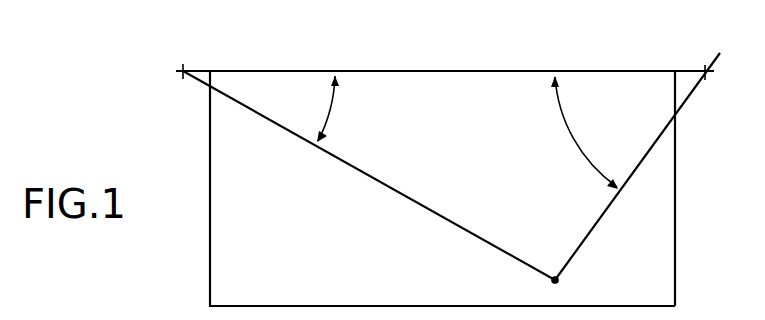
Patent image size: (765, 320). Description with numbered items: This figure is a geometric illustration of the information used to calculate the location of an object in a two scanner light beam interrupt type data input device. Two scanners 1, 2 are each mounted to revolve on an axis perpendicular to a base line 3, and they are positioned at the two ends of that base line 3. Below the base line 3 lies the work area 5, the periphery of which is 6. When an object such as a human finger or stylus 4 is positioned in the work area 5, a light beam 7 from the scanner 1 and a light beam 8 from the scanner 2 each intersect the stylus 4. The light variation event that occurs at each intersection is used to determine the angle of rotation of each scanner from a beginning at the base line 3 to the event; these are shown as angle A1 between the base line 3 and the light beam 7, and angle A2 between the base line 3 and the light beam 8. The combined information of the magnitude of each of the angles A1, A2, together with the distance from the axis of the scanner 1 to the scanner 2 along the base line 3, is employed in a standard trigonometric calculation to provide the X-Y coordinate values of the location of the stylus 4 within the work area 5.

The scanner 1 is at (183, 68).
The scanner 2 is at (721, 57).
The base line 3 is at (293, 71).
The stylus 4 is at (562, 277).
The work area 5 is at (218, 244).
The periphery 6 is at (677, 188).
The light beam 7 is at (242, 107).
The light beam 8 is at (690, 100).
The angle A1 is at (338, 109).
The angle A2 is at (575, 132).